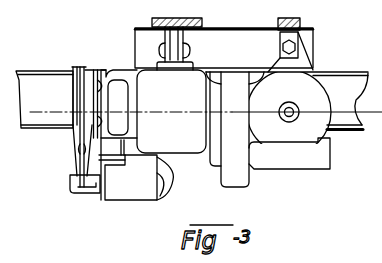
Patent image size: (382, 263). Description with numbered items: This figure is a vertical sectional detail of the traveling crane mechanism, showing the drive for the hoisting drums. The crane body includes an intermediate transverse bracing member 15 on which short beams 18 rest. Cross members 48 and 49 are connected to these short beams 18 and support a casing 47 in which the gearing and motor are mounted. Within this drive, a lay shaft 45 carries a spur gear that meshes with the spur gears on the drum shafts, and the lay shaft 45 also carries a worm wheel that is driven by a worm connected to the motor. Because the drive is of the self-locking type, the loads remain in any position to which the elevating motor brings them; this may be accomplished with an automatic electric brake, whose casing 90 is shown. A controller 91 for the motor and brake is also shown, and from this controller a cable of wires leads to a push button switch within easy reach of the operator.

The intermediate transverse bracing member 15 is at (44, 99).
The short beam 18 is at (251, 107).
The lay shaft 45 is at (299, 108).
The casing 47 is at (289, 112).
The cross member 48 is at (189, 43).
The cross member 49 is at (298, 23).
The brake casing 90 is at (78, 135).
The controller 91 is at (139, 177).